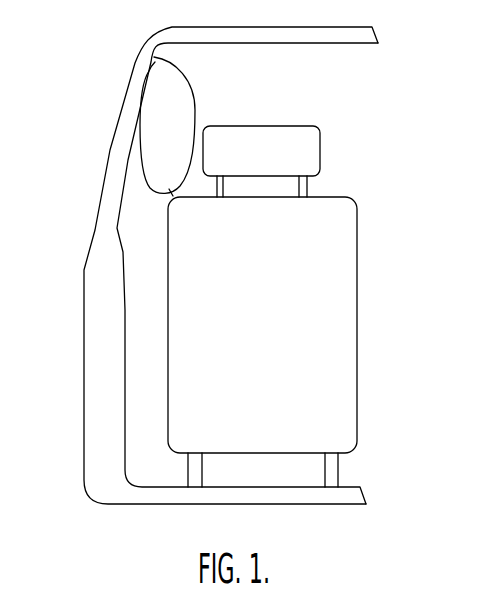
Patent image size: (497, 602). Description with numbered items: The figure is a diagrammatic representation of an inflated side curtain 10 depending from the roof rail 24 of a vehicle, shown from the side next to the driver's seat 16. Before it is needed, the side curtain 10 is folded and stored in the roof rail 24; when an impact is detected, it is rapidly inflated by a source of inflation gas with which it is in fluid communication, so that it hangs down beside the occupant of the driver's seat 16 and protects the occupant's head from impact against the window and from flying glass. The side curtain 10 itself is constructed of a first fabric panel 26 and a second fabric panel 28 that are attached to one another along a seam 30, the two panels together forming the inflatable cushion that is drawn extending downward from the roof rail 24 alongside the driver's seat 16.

The side curtain 10 is at (200, 145).
The driver's seat 16 is at (356, 243).
The roof rail 24 is at (135, 63).
The first fabric panel 26 is at (197, 122).
The second fabric panel 28 is at (140, 131).
The seam 30 is at (170, 193).